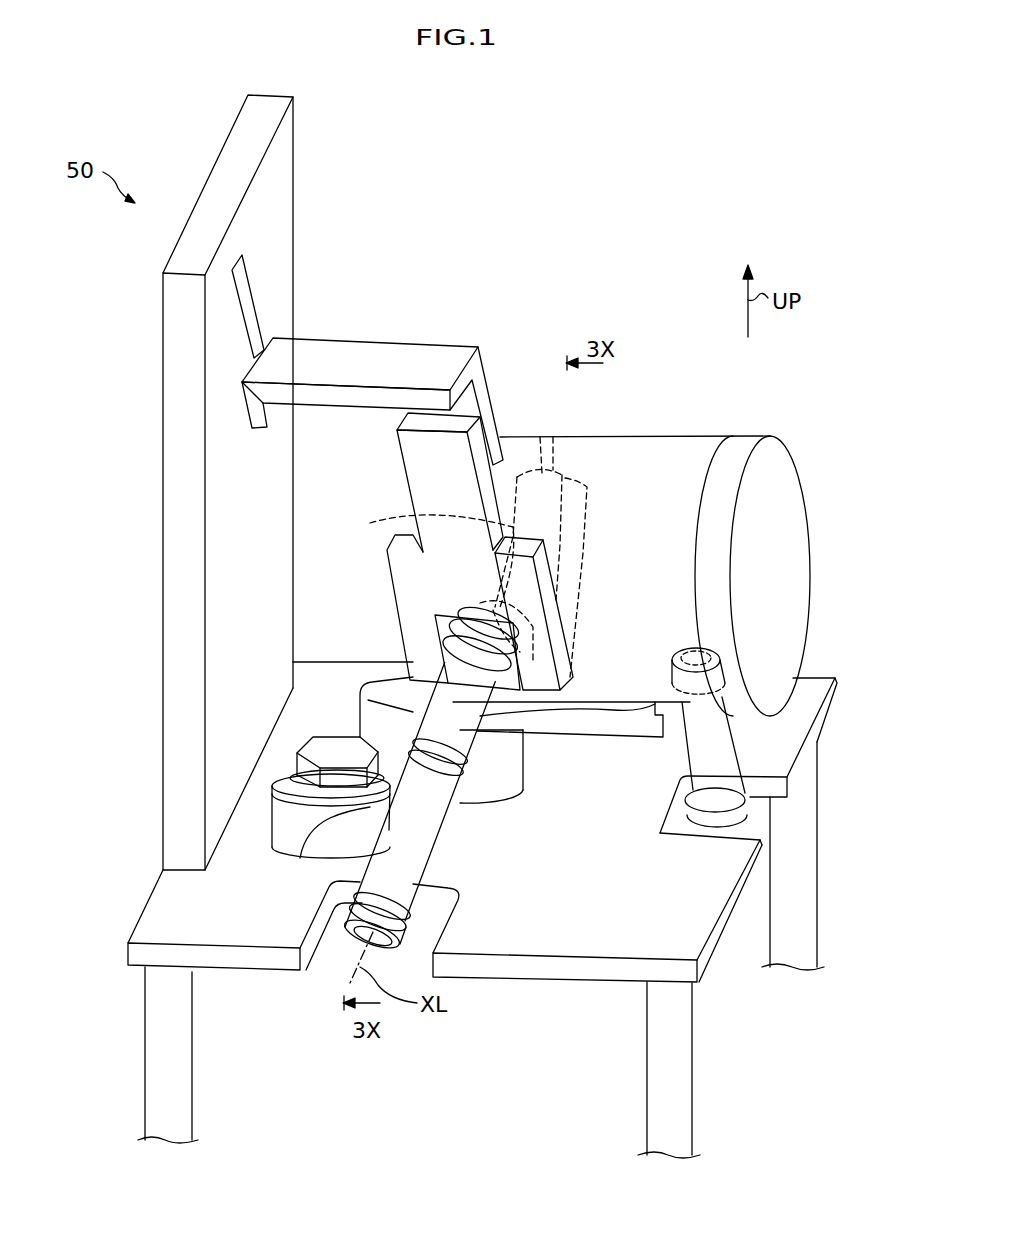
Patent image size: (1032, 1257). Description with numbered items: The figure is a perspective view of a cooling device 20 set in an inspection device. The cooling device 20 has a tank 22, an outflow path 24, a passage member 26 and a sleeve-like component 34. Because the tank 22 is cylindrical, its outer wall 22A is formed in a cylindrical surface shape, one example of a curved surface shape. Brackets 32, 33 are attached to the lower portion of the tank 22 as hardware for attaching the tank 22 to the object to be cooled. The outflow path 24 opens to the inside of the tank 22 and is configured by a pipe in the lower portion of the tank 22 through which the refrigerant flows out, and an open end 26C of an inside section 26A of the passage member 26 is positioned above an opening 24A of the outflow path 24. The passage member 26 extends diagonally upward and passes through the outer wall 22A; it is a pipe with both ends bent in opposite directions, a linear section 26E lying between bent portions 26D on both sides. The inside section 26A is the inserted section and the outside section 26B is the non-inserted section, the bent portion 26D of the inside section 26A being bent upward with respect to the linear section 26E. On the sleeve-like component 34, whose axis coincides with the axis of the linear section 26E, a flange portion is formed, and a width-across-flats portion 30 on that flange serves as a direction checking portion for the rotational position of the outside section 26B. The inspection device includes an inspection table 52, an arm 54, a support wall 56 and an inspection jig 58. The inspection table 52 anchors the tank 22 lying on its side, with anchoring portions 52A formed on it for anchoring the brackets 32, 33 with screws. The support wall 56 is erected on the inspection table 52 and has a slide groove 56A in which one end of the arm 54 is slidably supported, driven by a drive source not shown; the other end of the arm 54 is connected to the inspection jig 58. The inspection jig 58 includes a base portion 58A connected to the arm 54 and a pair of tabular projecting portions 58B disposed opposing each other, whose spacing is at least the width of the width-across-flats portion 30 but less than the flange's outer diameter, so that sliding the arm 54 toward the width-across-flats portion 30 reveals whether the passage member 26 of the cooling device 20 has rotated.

The cooling device 20 is at (663, 600).
The tank 22 is at (667, 433).
The outer wall 22A is at (613, 695).
The outflow path 24 is at (759, 706).
The opening 24A is at (690, 652).
The passage member 26 is at (416, 673).
The inside section 26A is at (583, 548).
The outside section 26B is at (505, 800).
The open end 26C is at (540, 437).
The bent portion 26D is at (370, 523).
The linear section 26E is at (360, 683).
The width-across-flats portion 30 is at (443, 632).
The bracket 32 is at (272, 792).
The bracket 33 is at (640, 738).
The sleeve-like component 34 is at (437, 662).
The inspection table 52 is at (712, 963).
The anchoring portion 52A is at (273, 836).
The arm 54 is at (392, 342).
The support wall 56 is at (163, 425).
The slide groove 56A is at (246, 296).
The inspection jig 58 is at (477, 551).
The base portion 58A is at (410, 499).
The projecting portion 58B is at (438, 648).